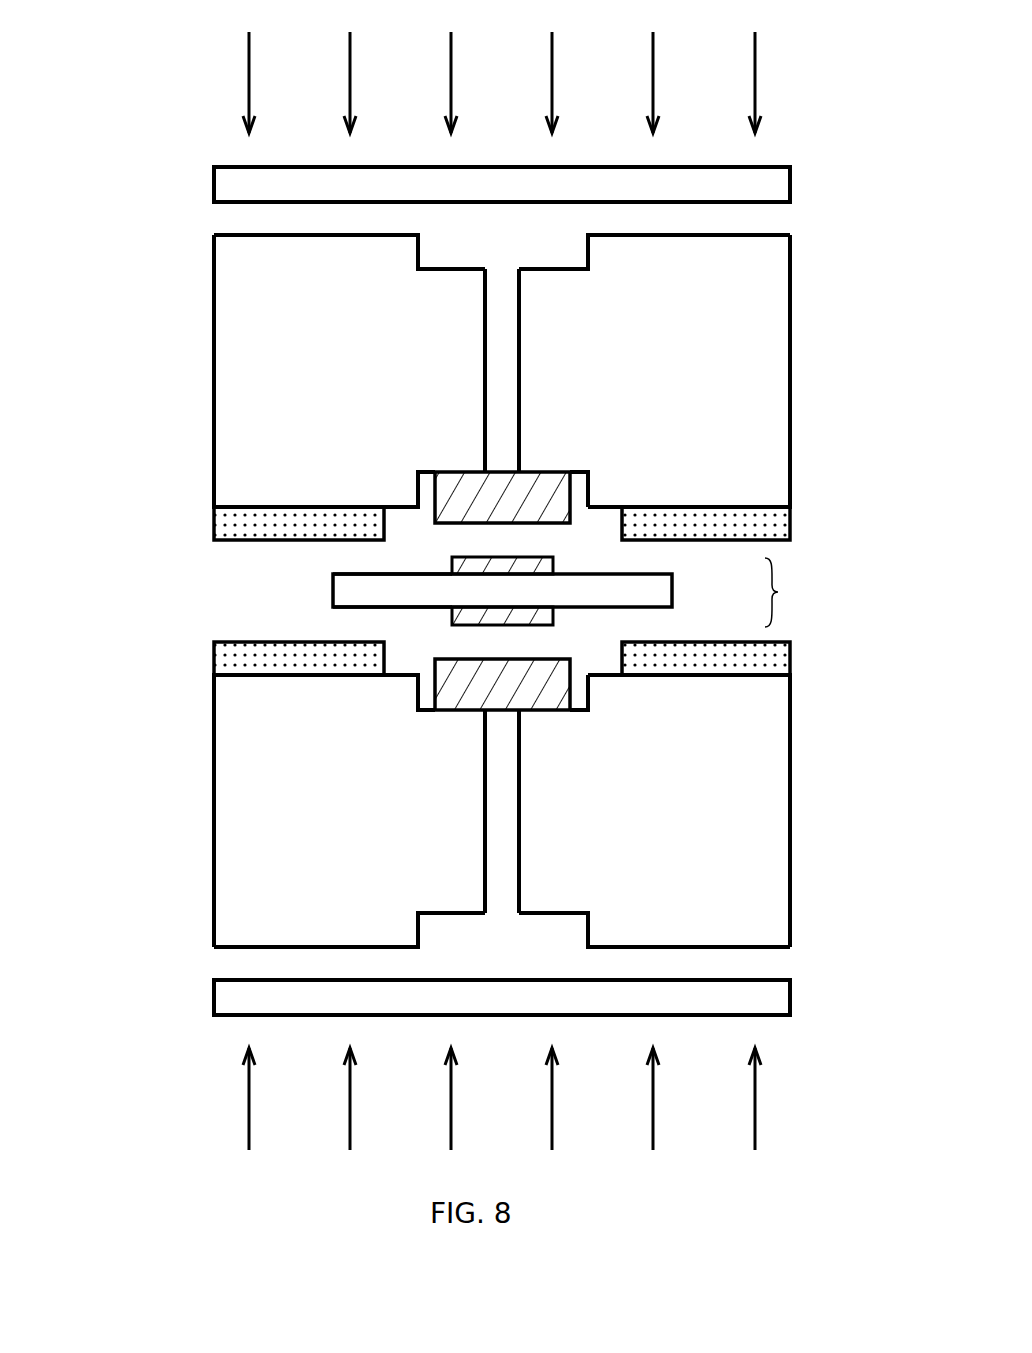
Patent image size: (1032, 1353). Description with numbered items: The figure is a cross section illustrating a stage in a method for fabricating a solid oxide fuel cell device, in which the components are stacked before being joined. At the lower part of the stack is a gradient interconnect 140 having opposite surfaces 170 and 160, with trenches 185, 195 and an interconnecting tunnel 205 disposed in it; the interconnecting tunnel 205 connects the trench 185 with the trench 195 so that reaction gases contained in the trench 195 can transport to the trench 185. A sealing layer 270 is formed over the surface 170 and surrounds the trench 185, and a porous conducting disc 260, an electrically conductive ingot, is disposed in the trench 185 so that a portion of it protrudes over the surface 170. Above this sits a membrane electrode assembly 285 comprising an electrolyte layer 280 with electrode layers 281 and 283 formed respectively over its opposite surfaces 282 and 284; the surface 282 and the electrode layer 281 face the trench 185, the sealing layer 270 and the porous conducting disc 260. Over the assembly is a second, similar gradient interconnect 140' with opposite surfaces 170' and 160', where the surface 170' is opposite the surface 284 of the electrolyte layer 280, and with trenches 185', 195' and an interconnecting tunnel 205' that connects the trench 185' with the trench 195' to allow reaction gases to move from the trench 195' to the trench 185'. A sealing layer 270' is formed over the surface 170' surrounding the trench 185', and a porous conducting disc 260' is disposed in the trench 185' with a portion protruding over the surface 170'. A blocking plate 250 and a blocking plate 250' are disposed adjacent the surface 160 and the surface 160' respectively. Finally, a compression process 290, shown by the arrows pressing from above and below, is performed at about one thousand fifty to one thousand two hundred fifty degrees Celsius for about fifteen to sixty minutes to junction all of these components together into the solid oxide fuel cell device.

The compression process 290 is at (757, 66).
The blocking plate 250' is at (546, 185).
The surface 160' is at (288, 237).
The trench 195' is at (699, 250).
The gradient interconnect 140' is at (429, 371).
The interconnecting tunnel 205' is at (682, 370).
The porous conducting disc 260' is at (349, 497).
The trench 185' is at (724, 489).
The surface 170' is at (238, 522).
The sealing layer 270' is at (750, 524).
The surface of the electrolyte layer 284 is at (362, 572).
The electrode layer 283 is at (545, 565).
The electrolyte layer 280 is at (640, 592).
The membrane electrode assembly 285 is at (801, 592).
The electrode layer 281 is at (548, 618).
The surface of the electrolyte layer 282 is at (362, 610).
The surface 170 is at (241, 660).
The sealing layer 270 is at (746, 659).
The porous conducting disc 260 is at (352, 684).
The trench 185 is at (720, 692).
The gradient interconnect 140 is at (432, 811).
The interconnecting tunnel 205 is at (678, 811).
The trench 195 is at (695, 930).
The surface 160 is at (291, 946).
The blocking plate 250 is at (542, 997).